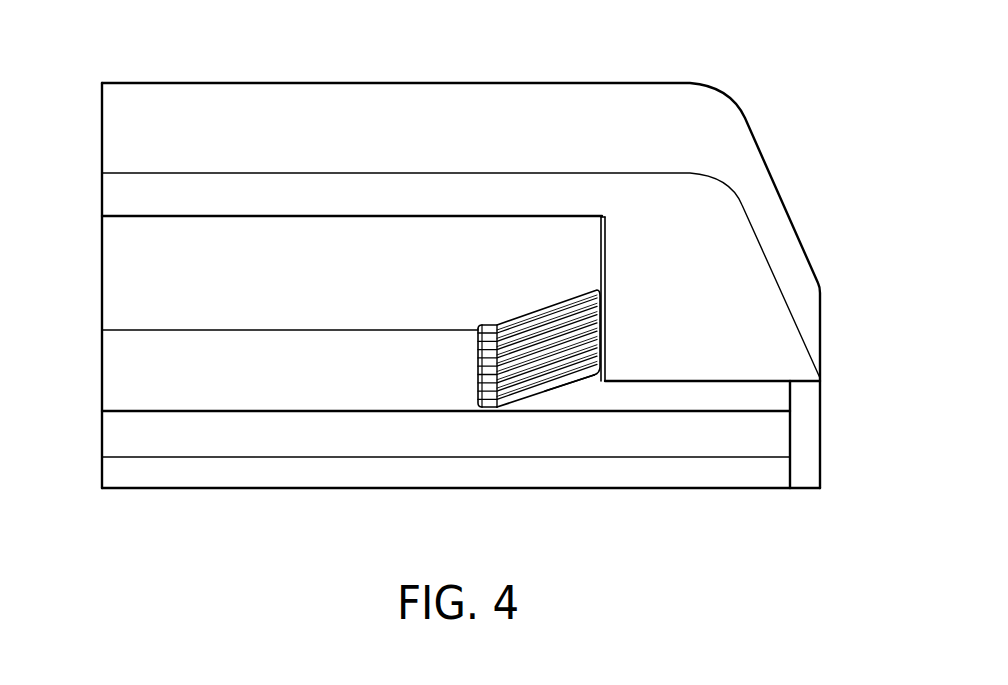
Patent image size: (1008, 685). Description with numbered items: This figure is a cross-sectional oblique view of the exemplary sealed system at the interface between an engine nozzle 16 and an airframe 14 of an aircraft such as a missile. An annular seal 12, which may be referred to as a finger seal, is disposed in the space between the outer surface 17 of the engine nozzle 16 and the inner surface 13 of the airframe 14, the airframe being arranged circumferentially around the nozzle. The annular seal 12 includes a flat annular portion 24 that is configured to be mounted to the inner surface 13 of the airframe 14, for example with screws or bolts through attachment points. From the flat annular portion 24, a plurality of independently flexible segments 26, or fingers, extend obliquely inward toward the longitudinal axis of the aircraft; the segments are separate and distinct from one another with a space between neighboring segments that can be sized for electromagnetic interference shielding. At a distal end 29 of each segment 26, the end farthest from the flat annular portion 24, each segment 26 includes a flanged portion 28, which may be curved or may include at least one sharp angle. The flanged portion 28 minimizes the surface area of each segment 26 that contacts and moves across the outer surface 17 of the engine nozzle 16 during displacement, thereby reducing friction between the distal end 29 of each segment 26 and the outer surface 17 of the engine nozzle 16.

The annular seal 12 is at (580, 400).
The inner surface of the airframe 13 is at (588, 215).
The airframe 14 is at (177, 123).
The engine nozzle 16 is at (248, 382).
The outer surface of the engine nozzle 17 is at (158, 336).
The flat annular portion 24 is at (600, 290).
The independently flexible segment 26 is at (524, 390).
The flanged portion 28 is at (487, 400).
The distal end 29 is at (483, 302).